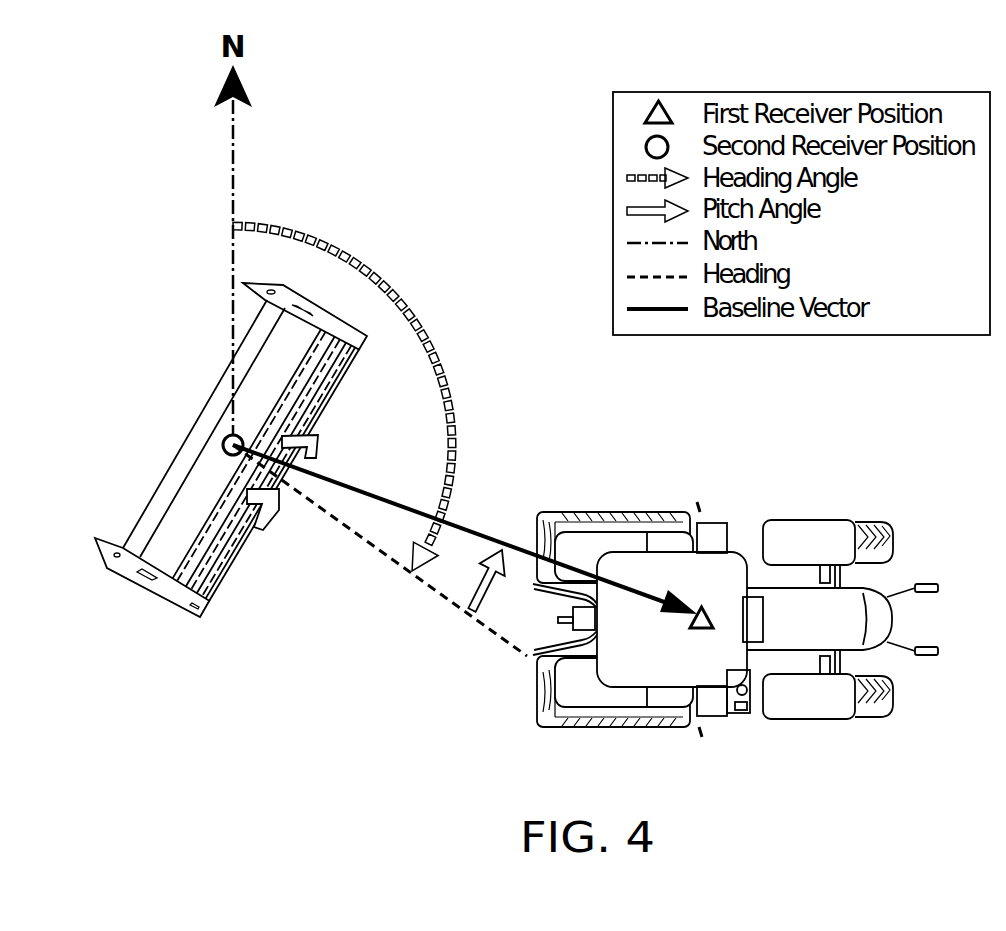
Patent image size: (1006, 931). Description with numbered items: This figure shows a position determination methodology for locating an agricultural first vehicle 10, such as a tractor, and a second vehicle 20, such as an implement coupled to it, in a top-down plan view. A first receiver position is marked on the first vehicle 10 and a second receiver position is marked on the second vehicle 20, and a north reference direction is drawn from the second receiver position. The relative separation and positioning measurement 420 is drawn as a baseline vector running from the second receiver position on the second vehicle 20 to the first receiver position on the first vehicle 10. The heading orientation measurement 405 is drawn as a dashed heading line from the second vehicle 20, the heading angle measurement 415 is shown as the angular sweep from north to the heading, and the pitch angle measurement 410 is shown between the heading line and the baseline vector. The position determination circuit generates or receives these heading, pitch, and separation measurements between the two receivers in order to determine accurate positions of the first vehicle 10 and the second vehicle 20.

The first vehicle 10 is at (817, 520).
The second vehicle 20 is at (200, 417).
The heading orientation measurement 405 is at (347, 523).
The pitch angle measurement 410 is at (488, 590).
The heading angle measurement 415 is at (417, 317).
The relative separation and positioning measurement 420 is at (462, 530).